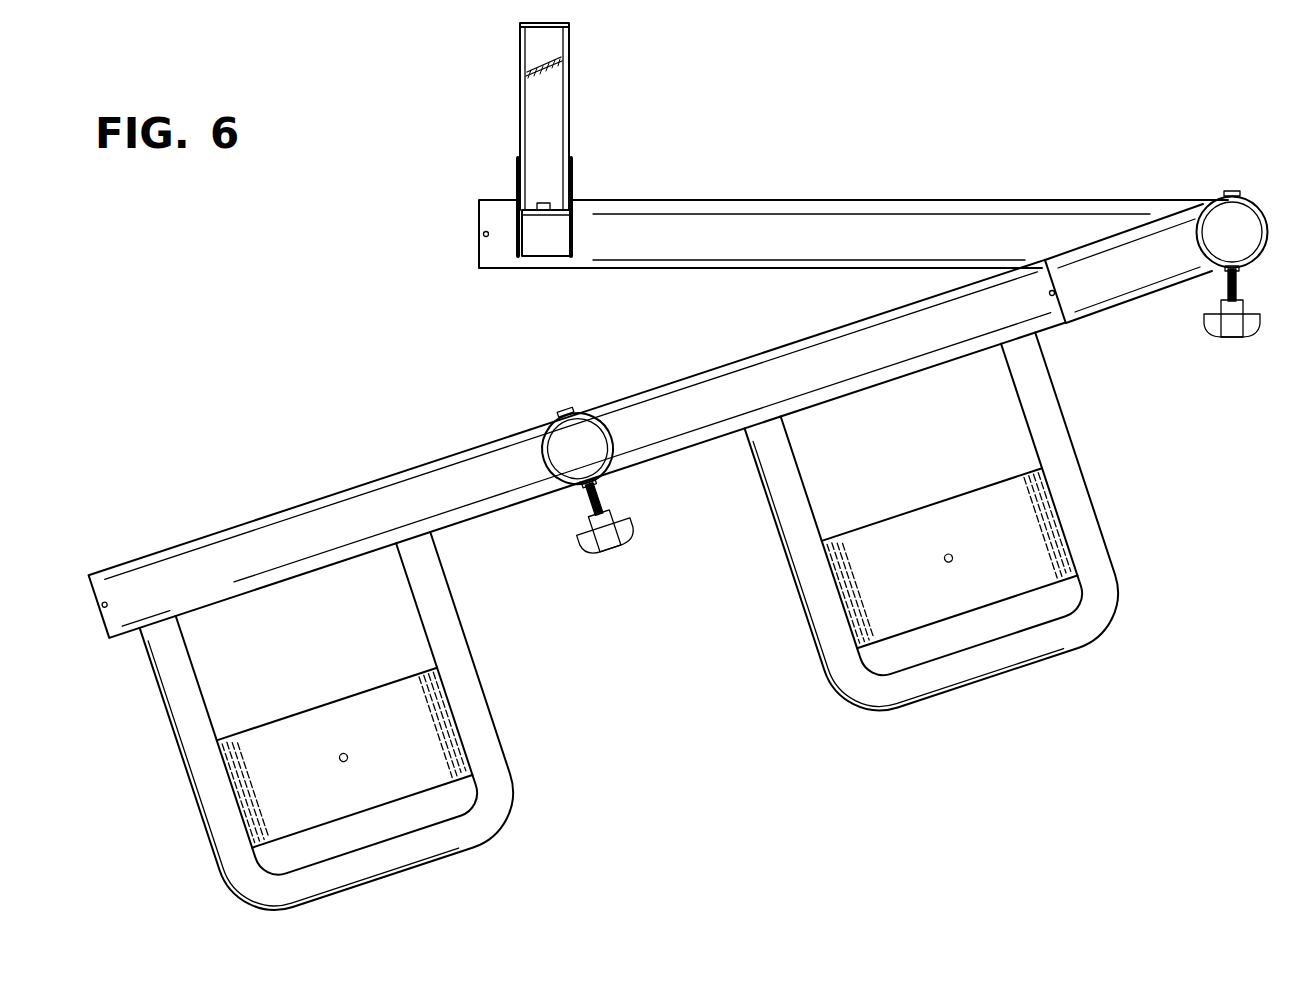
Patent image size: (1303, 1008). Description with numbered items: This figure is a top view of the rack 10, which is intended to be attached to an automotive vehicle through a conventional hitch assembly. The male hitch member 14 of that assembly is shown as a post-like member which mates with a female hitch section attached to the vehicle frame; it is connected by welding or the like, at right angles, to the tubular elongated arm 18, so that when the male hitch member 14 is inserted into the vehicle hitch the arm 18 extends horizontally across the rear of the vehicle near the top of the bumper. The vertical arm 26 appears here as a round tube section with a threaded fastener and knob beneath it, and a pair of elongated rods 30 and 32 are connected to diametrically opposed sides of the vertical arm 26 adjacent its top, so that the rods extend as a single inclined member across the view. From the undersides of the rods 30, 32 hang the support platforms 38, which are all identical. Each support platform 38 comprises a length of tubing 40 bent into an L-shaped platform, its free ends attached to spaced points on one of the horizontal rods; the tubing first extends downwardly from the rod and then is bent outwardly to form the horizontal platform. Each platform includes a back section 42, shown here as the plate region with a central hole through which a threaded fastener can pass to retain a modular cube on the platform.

The rack 10 is at (821, 178).
The male hitch member 14 is at (548, 98).
The tubular elongated arm 18 is at (648, 200).
The vertical arm 26 is at (602, 420).
The elongated rod 30 is at (693, 373).
The elongated rod 32 is at (277, 514).
The support platform 38 is at (134, 737).
The length of tubing 40 is at (494, 710).
The back section 42 is at (340, 700).